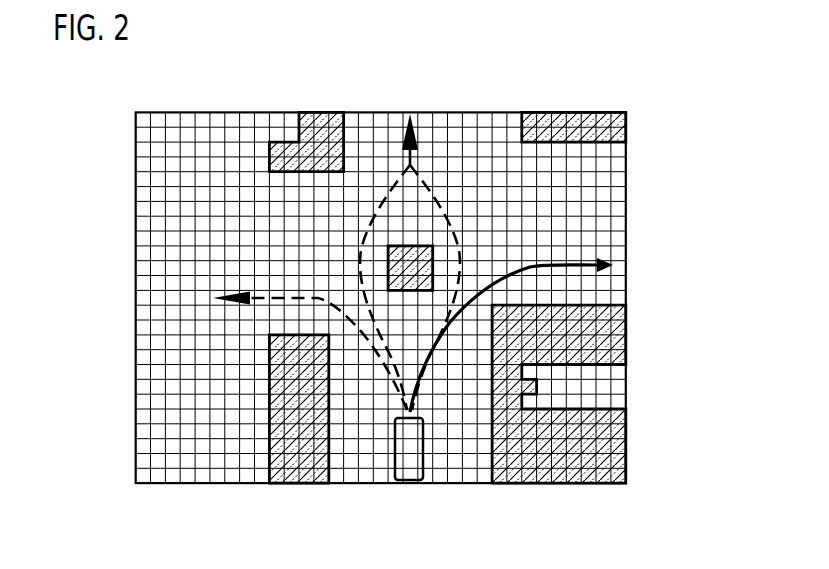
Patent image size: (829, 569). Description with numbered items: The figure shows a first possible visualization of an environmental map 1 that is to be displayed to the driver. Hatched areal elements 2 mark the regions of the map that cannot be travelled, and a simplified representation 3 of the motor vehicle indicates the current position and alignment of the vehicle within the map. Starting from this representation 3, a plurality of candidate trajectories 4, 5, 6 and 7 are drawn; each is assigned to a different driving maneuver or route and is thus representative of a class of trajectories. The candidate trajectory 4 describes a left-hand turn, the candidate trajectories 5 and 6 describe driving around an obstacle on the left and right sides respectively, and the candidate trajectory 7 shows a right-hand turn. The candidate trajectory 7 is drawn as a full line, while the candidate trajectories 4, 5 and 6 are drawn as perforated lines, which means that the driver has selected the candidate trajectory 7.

The environmental map 1 is at (627, 163).
The hatched areal elements 2 is at (321, 112).
The simplified representation of the motor vehicle 3 is at (403, 482).
The candidate trajectory 4 is at (293, 298).
The candidate trajectory 5 is at (380, 196).
The candidate trajectory 6 is at (438, 186).
The candidate trajectory 7 is at (547, 263).